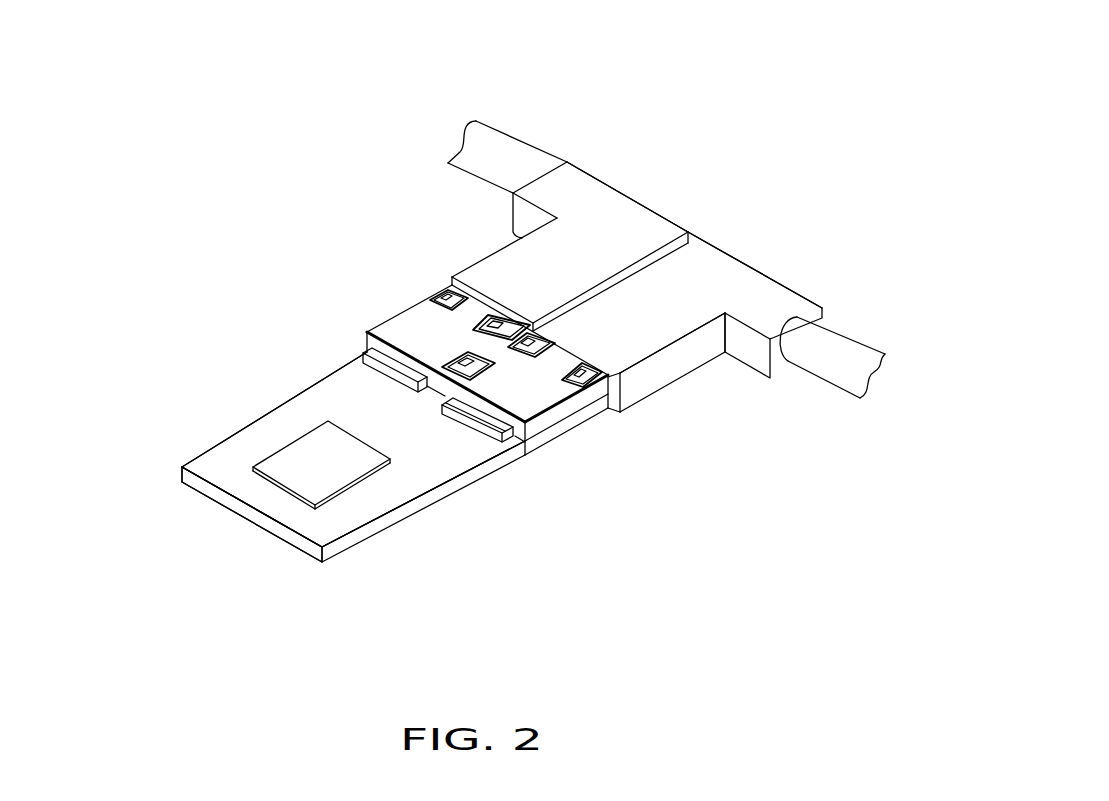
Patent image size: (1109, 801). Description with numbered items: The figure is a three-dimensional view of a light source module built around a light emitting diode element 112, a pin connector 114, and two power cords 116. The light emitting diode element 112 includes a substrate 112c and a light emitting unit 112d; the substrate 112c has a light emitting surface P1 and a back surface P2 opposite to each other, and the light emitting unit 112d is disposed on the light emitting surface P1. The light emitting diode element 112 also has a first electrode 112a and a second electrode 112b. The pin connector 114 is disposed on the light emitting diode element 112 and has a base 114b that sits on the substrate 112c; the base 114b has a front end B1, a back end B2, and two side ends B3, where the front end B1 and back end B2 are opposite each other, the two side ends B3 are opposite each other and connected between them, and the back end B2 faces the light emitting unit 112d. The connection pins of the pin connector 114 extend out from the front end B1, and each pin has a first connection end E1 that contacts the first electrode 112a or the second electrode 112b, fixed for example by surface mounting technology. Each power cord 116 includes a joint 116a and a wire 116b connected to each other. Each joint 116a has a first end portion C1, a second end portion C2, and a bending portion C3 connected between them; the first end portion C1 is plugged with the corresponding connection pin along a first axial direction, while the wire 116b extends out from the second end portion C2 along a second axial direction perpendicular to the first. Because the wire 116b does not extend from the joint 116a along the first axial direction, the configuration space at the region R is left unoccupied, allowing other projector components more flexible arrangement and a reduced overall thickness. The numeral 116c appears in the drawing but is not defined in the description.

The light emitting diode element 112 is at (329, 434).
The first electrode 112a is at (440, 387).
The second electrode 112b is at (455, 422).
The substrate 112c is at (392, 488).
The light emitting unit 112d is at (305, 474).
The pin connector 114 is at (490, 381).
The base 114b is at (535, 394).
The power cord 116 is at (641, 286).
The joint 116a is at (680, 291).
The wire 116b is at (504, 148).
The bent portion of cable 116c is at (663, 199).
The front end B1 is at (528, 360).
The back end B2 is at (435, 399).
The side ends B3 is at (430, 280).
The first end portion C1 is at (697, 275).
The second end portion C2 is at (735, 386).
The bending portion C3 is at (720, 340).
The first connection end E1 is at (396, 353).
The light emitting surface P1 is at (226, 443).
The back surface P2 is at (206, 529).
The region R is at (729, 190).